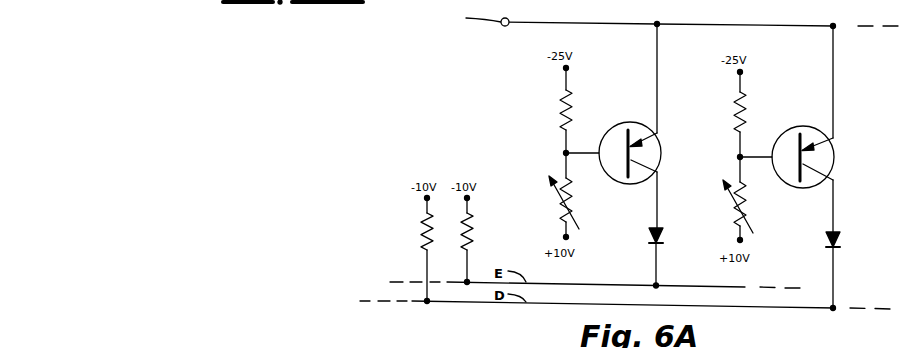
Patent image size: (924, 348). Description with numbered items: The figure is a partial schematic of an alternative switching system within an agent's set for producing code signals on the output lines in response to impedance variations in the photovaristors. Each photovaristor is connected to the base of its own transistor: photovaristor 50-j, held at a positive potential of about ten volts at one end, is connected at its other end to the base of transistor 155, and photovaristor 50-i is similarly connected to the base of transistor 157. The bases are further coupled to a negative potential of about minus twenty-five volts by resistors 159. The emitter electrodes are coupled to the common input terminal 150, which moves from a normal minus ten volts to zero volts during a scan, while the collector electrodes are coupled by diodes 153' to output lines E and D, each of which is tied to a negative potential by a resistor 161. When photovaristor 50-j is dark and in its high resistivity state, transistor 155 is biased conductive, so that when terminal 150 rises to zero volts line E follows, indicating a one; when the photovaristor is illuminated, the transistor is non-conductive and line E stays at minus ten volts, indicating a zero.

The common input terminal 150 is at (489, 23).
The resistor 159 is at (560, 108).
The transistor 155 is at (628, 122).
The transistor 157 is at (800, 126).
The photovaristor 50-j is at (561, 206).
The photovaristor 50-i is at (735, 208).
The diode 153' is at (632, 226).
The resistor 161 is at (421, 233).